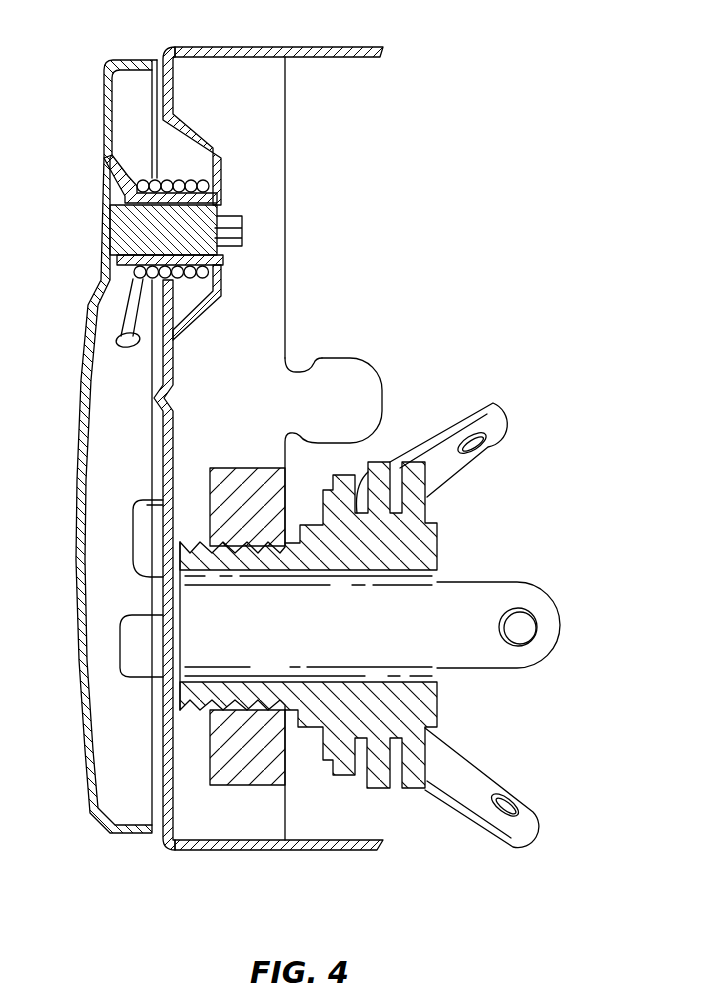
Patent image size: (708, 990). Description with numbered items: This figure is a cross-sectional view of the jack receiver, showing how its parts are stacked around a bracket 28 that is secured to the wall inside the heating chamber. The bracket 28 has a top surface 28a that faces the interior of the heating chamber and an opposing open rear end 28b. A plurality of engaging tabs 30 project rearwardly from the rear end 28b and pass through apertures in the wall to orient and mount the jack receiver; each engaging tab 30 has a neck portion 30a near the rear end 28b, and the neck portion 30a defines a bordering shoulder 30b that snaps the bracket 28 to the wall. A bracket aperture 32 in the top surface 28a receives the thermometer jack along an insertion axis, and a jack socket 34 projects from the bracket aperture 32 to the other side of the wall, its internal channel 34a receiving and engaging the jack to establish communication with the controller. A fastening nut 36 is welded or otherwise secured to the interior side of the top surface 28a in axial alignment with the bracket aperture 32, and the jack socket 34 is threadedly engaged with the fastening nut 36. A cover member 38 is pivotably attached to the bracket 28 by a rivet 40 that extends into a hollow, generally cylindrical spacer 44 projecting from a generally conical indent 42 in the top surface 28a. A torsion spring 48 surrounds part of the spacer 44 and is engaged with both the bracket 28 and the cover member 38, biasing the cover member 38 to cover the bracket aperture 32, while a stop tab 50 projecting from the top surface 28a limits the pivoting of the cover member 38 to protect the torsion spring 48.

The bracket 28 is at (200, 851).
The top surface 28a is at (87, 441).
The open rear end 28b is at (287, 168).
The engaging tab 30 is at (296, 452).
The neck portion 30a is at (298, 370).
The bordering shoulder 30b is at (307, 372).
The bracket aperture 32 is at (164, 690).
The jack socket 34 is at (370, 625).
The internal channel 34a is at (413, 640).
The fastening nut 36 is at (277, 758).
The cover member 38 is at (106, 104).
The rivet 40 is at (106, 224).
The conical indent 42 is at (156, 154).
The spacer 44 is at (136, 258).
The torsion spring 48 is at (135, 181).
The stop tab 50 is at (152, 650).